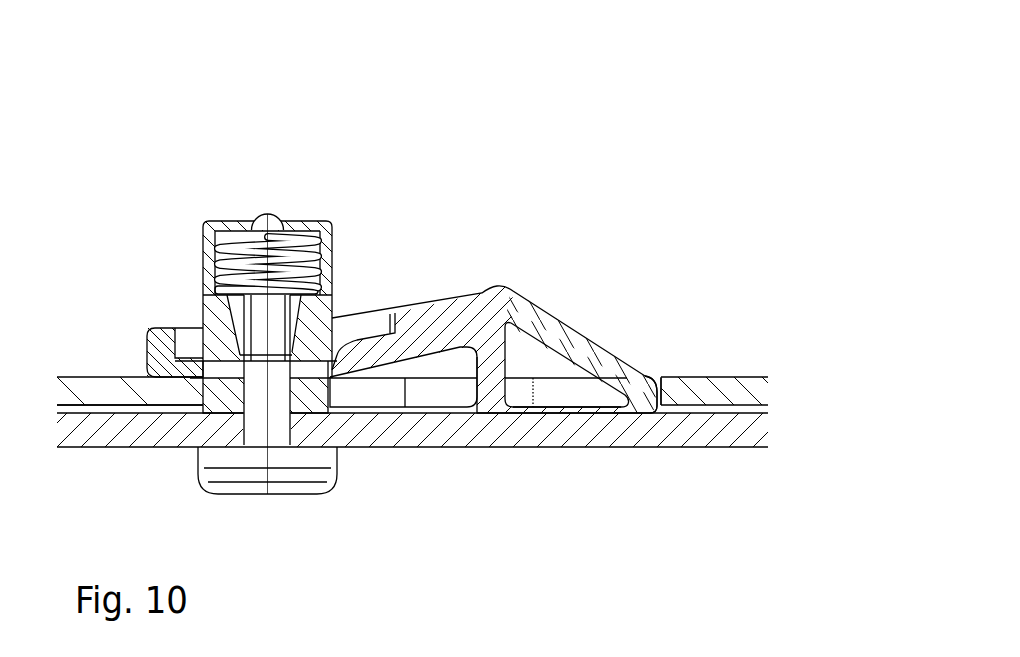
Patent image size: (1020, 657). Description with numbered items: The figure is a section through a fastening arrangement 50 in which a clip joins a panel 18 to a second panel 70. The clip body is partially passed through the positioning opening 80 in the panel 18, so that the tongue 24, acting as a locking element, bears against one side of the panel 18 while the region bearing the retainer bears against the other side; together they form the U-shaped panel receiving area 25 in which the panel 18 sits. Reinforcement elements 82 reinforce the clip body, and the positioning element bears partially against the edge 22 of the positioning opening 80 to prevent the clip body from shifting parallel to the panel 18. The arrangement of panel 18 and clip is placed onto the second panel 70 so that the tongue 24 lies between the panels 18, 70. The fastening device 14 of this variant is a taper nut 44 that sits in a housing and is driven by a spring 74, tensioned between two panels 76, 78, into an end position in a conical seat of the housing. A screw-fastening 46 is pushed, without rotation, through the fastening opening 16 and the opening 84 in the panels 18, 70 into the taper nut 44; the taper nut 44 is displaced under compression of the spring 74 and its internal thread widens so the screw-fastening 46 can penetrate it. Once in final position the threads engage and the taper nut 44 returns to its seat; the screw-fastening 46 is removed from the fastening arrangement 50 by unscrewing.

The fastening device 14 is at (205, 278).
The fastening opening 16 is at (305, 403).
The panel 18 is at (742, 394).
The edge of the positioning opening 22 is at (662, 387).
The tongue 24 is at (168, 410).
The panel receiving area 25 is at (448, 367).
The taper nut 44 is at (303, 322).
The screw-fastening 46 is at (230, 490).
The fastening arrangement 50 is at (755, 117).
The second panel 70 is at (753, 438).
The spring 74 is at (307, 262).
The panel 76 is at (308, 227).
The panel 78 is at (222, 293).
The positioning opening 80 is at (567, 395).
The reinforcement element 82 is at (497, 290).
The opening 84 is at (292, 430).